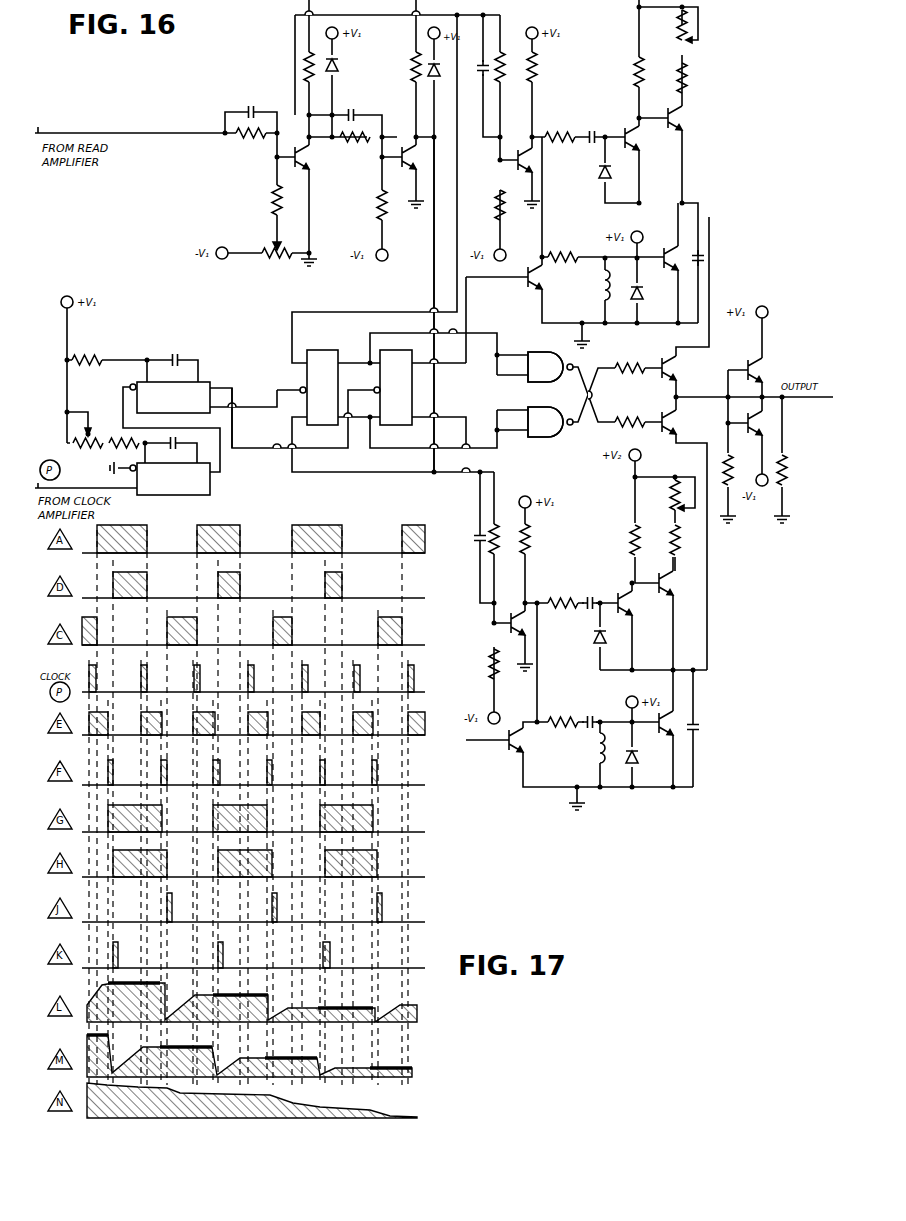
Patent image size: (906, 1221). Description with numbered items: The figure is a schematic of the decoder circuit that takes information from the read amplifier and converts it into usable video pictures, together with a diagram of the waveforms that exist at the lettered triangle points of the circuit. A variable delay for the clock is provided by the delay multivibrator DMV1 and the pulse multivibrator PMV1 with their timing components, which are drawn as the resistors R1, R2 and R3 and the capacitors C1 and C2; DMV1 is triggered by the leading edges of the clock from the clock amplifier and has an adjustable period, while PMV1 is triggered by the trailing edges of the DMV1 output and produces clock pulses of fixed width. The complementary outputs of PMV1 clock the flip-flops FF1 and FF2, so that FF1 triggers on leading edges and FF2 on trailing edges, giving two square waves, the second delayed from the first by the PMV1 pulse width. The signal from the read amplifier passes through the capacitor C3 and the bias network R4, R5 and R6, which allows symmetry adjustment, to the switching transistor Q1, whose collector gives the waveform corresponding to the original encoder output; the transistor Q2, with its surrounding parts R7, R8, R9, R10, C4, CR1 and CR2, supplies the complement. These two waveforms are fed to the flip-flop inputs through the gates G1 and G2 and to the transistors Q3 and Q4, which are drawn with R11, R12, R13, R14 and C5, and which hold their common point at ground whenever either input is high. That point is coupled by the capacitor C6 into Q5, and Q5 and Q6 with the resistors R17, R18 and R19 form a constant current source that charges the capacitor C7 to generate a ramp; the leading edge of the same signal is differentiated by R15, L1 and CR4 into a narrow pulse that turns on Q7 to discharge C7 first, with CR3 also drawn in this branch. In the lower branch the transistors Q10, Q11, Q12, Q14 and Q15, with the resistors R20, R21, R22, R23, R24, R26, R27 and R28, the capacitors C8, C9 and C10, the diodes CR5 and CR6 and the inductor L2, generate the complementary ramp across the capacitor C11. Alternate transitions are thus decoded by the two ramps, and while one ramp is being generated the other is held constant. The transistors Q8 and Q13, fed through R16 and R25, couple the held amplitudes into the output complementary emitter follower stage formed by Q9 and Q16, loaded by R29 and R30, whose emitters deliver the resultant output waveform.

The resistor R1 is at (88, 450).
The resistor R2 is at (124, 450).
The resistor R3 is at (87, 367).
The bias network resistor R4 is at (251, 140).
The bias network resistor R5 is at (266, 200).
The bias network resistor R6 is at (277, 261).
The resistor R7 is at (304, 67).
The resistor R8 is at (355, 144).
The resistor R9 is at (372, 205).
The resistor R10 is at (408, 67).
The resistor R11 is at (510, 67).
The resistor R12 is at (487, 205).
The resistor R13 is at (542, 67).
The resistor R14 is at (560, 131).
The differentiating resistor R15 is at (563, 251).
The resistor R16 is at (630, 362).
The resistor R17 is at (629, 72).
The potentiometer R18 is at (669, 25).
The resistor R19 is at (669, 78).
The resistor R20 is at (503, 539).
The resistor R21 is at (503, 664).
The resistor R22 is at (535, 539).
The resistor R23 is at (563, 597).
The resistor R24 is at (563, 716).
The resistor R25 is at (630, 416).
The resistor R26 is at (624, 540).
The potentiometer R27 is at (663, 495).
The resistor R28 is at (664, 540).
The resistor R29 is at (738, 470).
The resistor R30 is at (792, 470).
The capacitor C1 is at (173, 448).
The capacitor C2 is at (175, 353).
The capacitor C3 is at (251, 107).
The capacitor C4 is at (351, 108).
The capacitor C5 is at (476, 66).
The coupling capacitor C6 is at (592, 131).
The ramp capacitor C7 is at (694, 253).
The capacitor C8 is at (474, 535).
The capacitor C9 is at (588, 608).
The capacitor C10 is at (586, 728).
The capacitor C11 is at (705, 727).
The diode CR1 is at (343, 65).
The diode CR2 is at (443, 77).
The diode CR3 is at (593, 173).
The differentiating diode CR4 is at (648, 294).
The diode CR5 is at (587, 637).
The diode CR6 is at (643, 757).
The switching transistor Q1 is at (303, 157).
The transistor Q2 is at (408, 156).
The transistor Q3 is at (525, 160).
The transistor Q4 is at (537, 280).
The constant current source transistor Q5 is at (634, 138).
The constant current source transistor Q6 is at (677, 120).
The discharge transistor Q7 is at (673, 260).
The coupling transistor Q8 is at (672, 368).
The output emitter follower transistor Q9 is at (757, 370).
The transistor Q10 is at (523, 623).
The transistor Q11 is at (521, 740).
The transistor Q12 is at (630, 603).
The coupling transistor Q13 is at (674, 422).
The transistor Q14 is at (671, 583).
The transistor Q15 is at (671, 723).
The output emitter follower transistor Q16 is at (760, 423).
The differentiating inductor L1 is at (597, 285).
The inductor L2 is at (592, 748).
The flip-flop FF1 is at (322, 387).
The flip-flop FF2 is at (396, 387).
The NAND gate G1 is at (545, 367).
The NAND gate G2 is at (545, 422).
The pulse multivibrator PMV1 is at (173, 397).
The delay multivibrator DMV1 is at (173, 479).